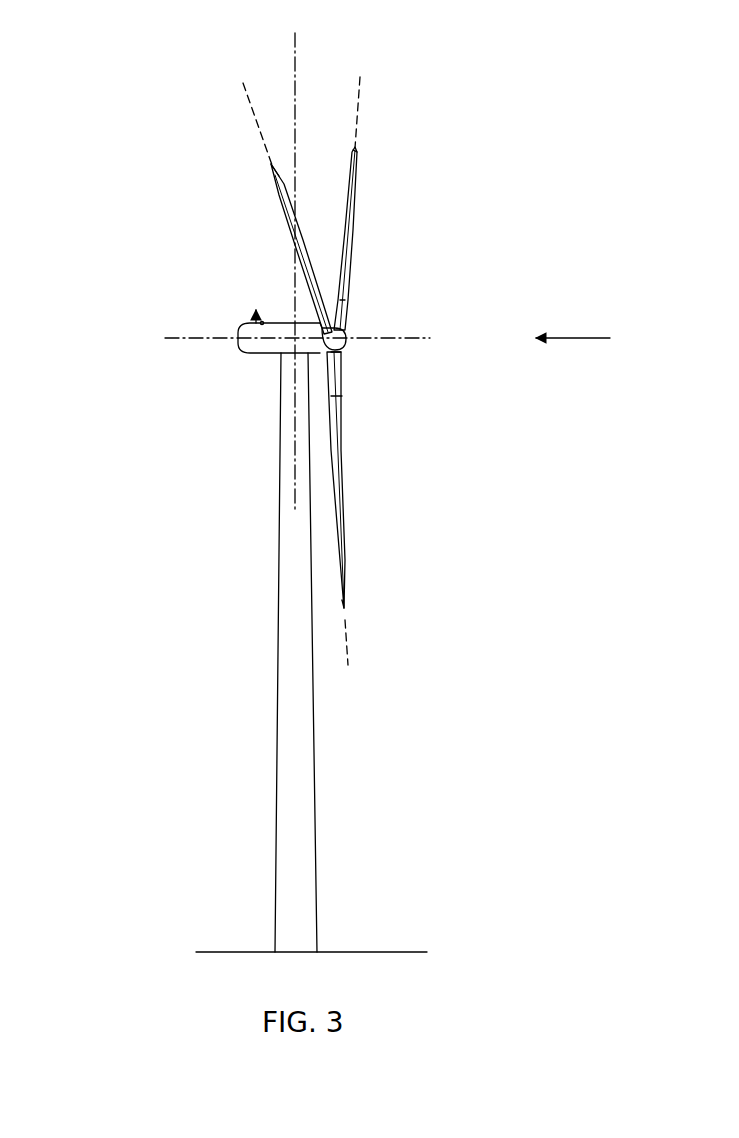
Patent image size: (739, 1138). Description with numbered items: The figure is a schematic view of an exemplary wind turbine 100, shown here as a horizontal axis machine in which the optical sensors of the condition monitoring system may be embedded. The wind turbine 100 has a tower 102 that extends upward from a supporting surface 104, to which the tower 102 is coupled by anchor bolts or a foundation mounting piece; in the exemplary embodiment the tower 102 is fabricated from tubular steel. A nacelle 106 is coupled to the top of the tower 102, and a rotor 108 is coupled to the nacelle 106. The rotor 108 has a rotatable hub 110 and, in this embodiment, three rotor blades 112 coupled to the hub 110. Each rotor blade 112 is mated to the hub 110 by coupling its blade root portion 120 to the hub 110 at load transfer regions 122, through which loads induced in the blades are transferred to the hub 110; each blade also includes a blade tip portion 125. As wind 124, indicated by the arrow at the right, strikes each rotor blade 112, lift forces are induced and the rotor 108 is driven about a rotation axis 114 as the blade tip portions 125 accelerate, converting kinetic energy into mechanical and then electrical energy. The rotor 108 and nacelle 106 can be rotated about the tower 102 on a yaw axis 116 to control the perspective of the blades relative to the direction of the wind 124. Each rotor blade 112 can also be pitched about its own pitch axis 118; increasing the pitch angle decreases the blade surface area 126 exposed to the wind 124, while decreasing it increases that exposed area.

The wind turbine 100 is at (107, 173).
The tower 102 is at (277, 773).
The supporting surface 104 is at (240, 952).
The nacelle 106 is at (265, 355).
The rotor 108 is at (355, 262).
The hub 110 is at (348, 336).
The rotor blades 112 is at (291, 221).
The rotation axis 114 is at (398, 340).
The yaw axis 116 is at (297, 50).
The pitch axis 118 is at (248, 103).
The blade root portion 120 is at (343, 397).
The load transfer regions 122 is at (340, 356).
The wind 124 is at (583, 338).
The blade tip portion 125 is at (283, 170).
The blade surface area 126 is at (344, 300).